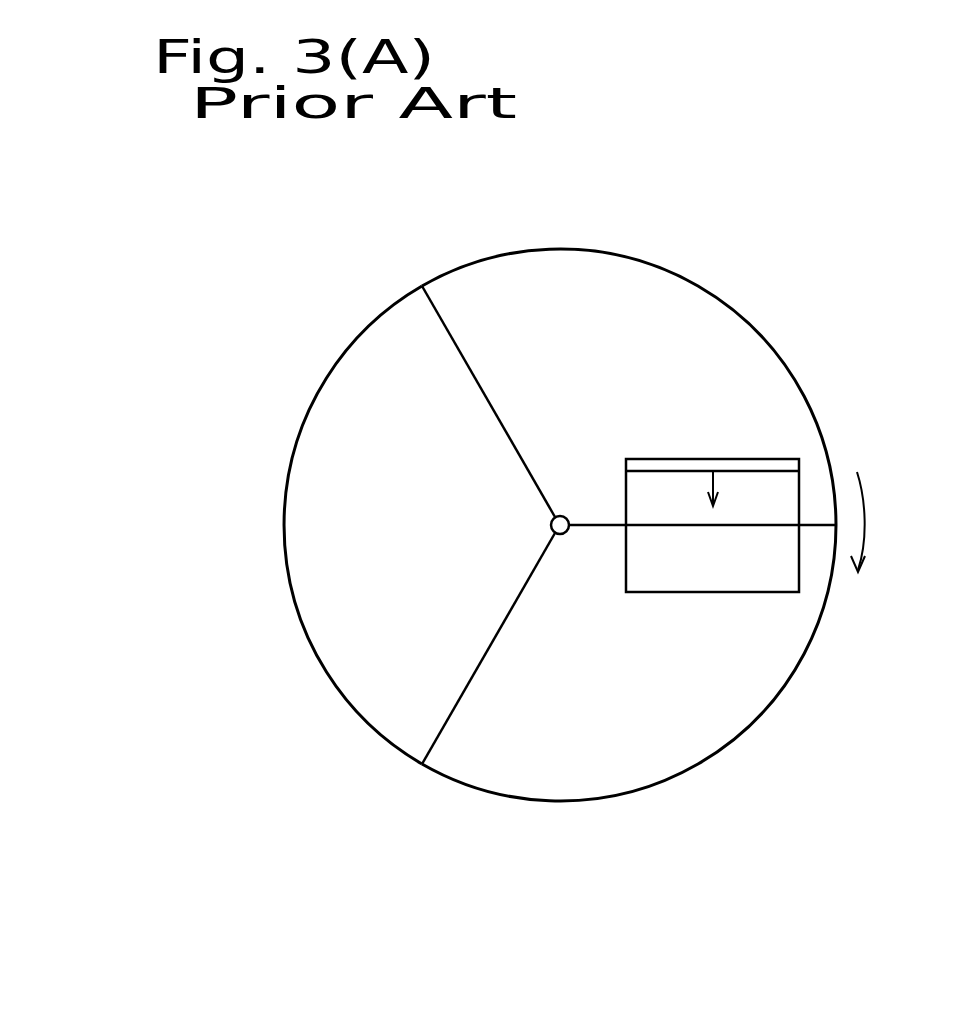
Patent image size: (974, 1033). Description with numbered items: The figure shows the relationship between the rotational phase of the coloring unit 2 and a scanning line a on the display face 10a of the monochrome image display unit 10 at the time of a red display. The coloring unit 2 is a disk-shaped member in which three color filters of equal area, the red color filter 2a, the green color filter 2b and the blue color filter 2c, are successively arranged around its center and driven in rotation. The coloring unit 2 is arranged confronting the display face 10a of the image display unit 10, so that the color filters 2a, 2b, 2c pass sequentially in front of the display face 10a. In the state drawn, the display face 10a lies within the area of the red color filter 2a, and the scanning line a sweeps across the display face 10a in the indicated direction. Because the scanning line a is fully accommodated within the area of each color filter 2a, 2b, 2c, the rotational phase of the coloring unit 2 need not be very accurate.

The coloring unit 2 is at (518, 502).
The red color filter 2a is at (632, 278).
The green color filter 2b is at (315, 603).
The blue color filter 2c is at (682, 750).
The monochrome image display unit 10 is at (786, 532).
The display face 10a is at (763, 583).
The scanning line a is at (678, 471).